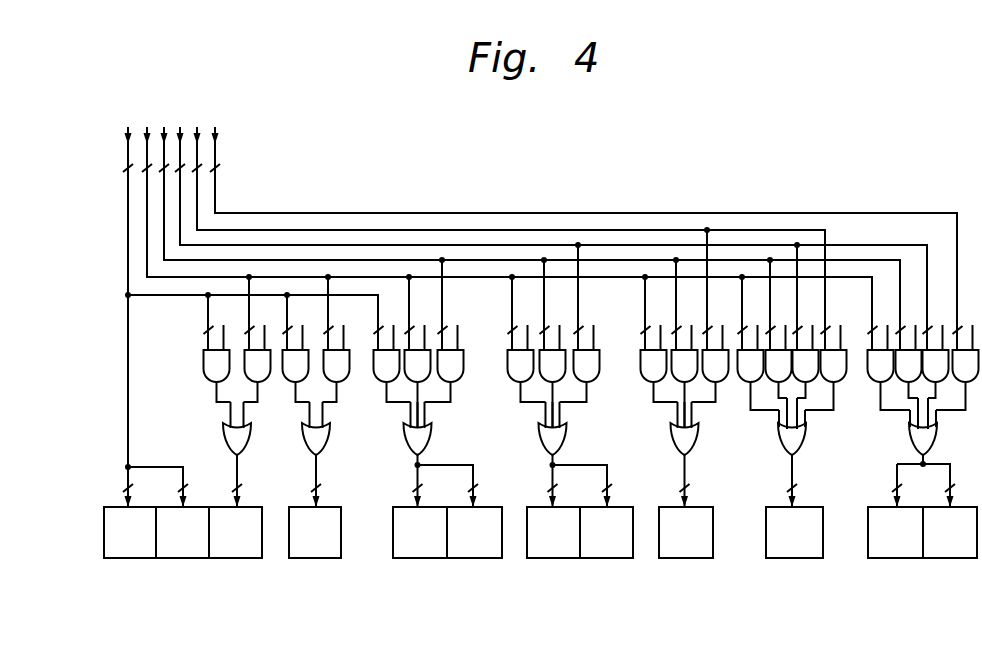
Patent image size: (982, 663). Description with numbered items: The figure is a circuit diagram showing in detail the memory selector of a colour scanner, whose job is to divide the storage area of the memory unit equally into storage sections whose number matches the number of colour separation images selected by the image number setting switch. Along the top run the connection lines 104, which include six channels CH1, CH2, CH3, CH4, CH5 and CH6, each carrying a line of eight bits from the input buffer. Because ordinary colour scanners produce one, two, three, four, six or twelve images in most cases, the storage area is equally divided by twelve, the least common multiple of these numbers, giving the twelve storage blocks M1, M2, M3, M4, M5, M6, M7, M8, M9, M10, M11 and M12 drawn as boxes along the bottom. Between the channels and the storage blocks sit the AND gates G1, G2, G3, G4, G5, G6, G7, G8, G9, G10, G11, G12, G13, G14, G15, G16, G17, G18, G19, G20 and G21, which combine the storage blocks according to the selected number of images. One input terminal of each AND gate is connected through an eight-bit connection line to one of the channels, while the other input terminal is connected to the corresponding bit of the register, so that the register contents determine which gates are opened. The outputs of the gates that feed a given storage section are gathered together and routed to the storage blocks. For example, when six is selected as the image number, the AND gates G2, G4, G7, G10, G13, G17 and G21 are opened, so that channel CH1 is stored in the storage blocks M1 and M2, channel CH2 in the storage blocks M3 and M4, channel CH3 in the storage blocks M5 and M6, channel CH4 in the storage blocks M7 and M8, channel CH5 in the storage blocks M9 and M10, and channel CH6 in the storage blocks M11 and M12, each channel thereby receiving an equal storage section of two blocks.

The connection lines 104 is at (232, 191).
The channel CH1 is at (128, 130).
The channel CH2 is at (147, 128).
The channel CH3 is at (164, 128).
The channel CH4 is at (180, 129).
The channel CH5 is at (197, 129).
The channel CH6 is at (215, 150).
The AND gate G1 is at (217, 353).
The AND gate G2 is at (258, 353).
The AND gate G3 is at (296, 353).
The AND gate G4 is at (337, 353).
The AND gate G5 is at (387, 353).
The AND gate G6 is at (418, 353).
The AND gate G7 is at (451, 353).
The AND gate G8 is at (521, 353).
The AND gate G9 is at (553, 353).
The AND gate G10 is at (587, 353).
The AND gate G11 is at (654, 353).
The AND gate G12 is at (685, 353).
The AND gate G13 is at (716, 353).
The AND gate G14 is at (751, 353).
The AND gate G15 is at (779, 353).
The AND gate G16 is at (806, 353).
The AND gate G17 is at (834, 353).
The AND gate G18 is at (881, 353).
The AND gate G19 is at (909, 353).
The AND gate G20 is at (936, 353).
The AND gate G21 is at (966, 353).
The storage block M1 is at (130, 532).
The storage block M2 is at (182, 532).
The storage block M3 is at (235, 532).
The storage block M4 is at (315, 532).
The storage block M5 is at (420, 532).
The storage block M6 is at (474, 532).
The storage block M7 is at (553, 532).
The storage block M8 is at (606, 532).
The storage block M9 is at (686, 532).
The storage block M10 is at (794, 532).
The storage block M11 is at (895, 532).
The storage block M12 is at (950, 532).